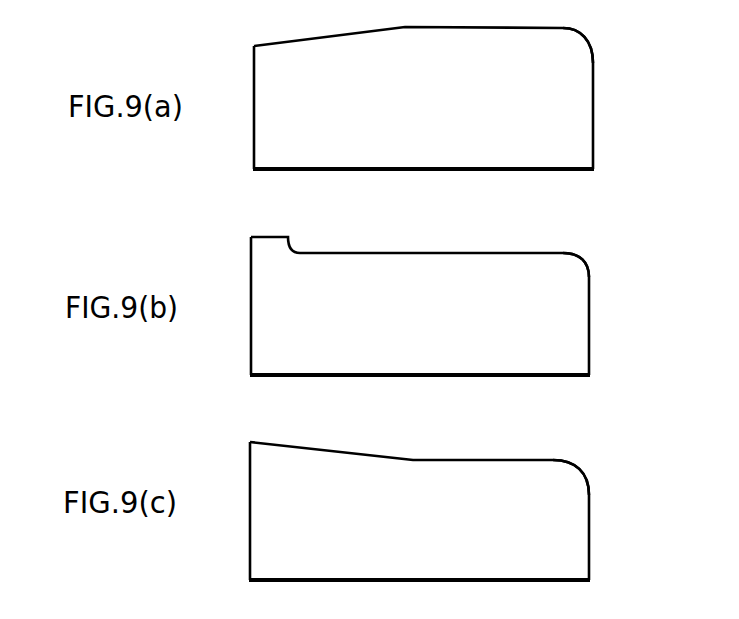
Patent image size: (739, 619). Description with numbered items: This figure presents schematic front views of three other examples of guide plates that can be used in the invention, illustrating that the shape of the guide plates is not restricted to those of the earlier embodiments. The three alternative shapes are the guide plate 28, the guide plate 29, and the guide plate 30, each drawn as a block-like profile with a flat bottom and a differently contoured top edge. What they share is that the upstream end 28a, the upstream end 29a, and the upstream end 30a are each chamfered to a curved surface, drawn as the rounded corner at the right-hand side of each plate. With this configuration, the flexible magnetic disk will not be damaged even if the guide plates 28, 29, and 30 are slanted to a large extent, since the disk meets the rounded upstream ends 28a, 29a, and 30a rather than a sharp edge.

In FIG. 9A, the guide plate 28 is at (582, 110).
In FIG. 9A, the upstream end of guide plate 28a is at (590, 40).
In FIG. 9B, the guide plate 29 is at (573, 322).
In FIG. 9B, the upstream end of guide plate 29a is at (587, 263).
In FIG. 9C, the guide plate 30 is at (575, 522).
In FIG. 9C, the upstream end of guide plate 30a is at (582, 472).